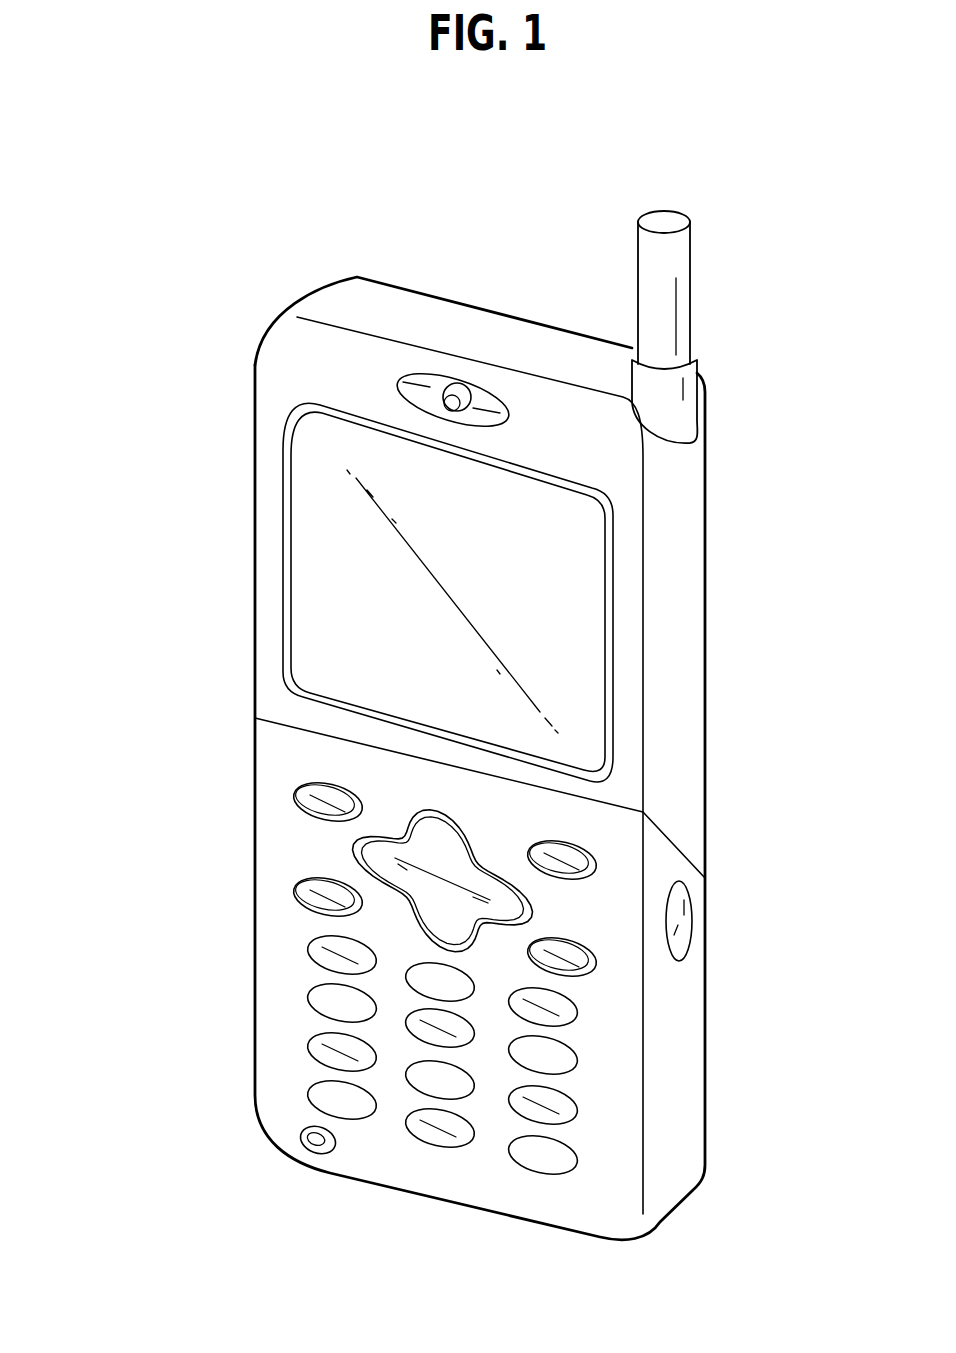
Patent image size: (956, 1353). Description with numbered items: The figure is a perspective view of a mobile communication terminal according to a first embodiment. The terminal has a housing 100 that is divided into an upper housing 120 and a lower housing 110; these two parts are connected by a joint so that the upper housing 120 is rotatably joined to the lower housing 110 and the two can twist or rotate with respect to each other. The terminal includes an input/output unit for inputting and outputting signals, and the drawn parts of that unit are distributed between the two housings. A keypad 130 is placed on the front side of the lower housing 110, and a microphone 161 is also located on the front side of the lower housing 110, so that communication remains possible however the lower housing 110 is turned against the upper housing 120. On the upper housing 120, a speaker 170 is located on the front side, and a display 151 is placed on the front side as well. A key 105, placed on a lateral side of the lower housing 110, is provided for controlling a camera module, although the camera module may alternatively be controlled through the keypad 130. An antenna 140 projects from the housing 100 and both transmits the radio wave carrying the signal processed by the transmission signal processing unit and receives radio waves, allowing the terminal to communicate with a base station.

The housing 100 is at (140, 655).
The key 105 is at (688, 922).
The lower housing 110 is at (262, 927).
The upper housing 120 is at (263, 655).
The keypad 130 is at (594, 1069).
The antenna 140 is at (668, 278).
The display 151 is at (307, 570).
The microphone 161 is at (316, 1140).
The speaker 170 is at (457, 392).